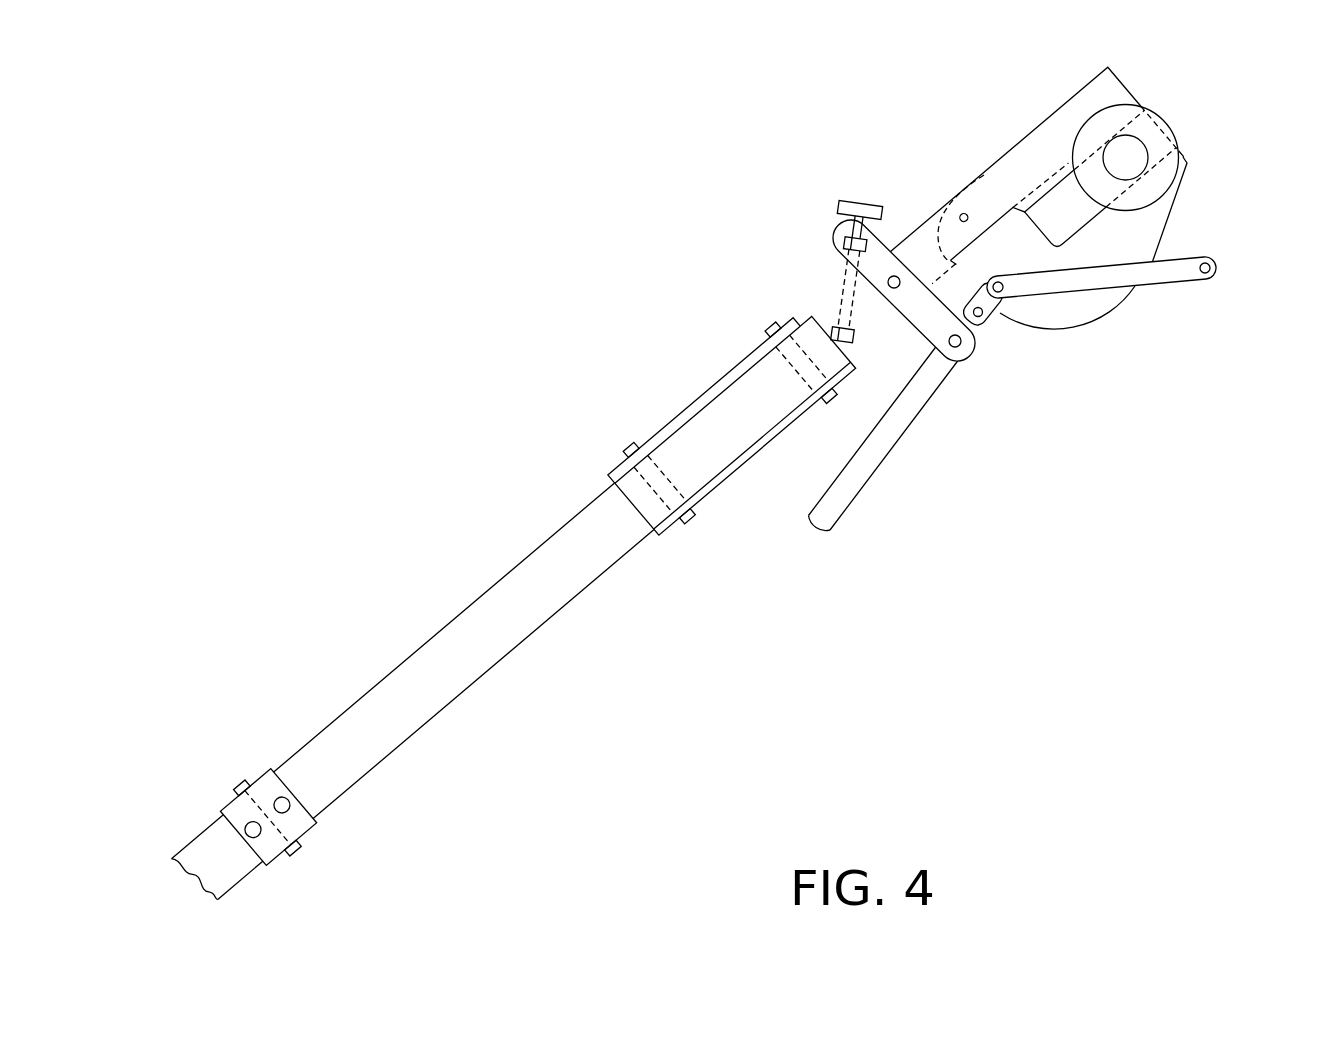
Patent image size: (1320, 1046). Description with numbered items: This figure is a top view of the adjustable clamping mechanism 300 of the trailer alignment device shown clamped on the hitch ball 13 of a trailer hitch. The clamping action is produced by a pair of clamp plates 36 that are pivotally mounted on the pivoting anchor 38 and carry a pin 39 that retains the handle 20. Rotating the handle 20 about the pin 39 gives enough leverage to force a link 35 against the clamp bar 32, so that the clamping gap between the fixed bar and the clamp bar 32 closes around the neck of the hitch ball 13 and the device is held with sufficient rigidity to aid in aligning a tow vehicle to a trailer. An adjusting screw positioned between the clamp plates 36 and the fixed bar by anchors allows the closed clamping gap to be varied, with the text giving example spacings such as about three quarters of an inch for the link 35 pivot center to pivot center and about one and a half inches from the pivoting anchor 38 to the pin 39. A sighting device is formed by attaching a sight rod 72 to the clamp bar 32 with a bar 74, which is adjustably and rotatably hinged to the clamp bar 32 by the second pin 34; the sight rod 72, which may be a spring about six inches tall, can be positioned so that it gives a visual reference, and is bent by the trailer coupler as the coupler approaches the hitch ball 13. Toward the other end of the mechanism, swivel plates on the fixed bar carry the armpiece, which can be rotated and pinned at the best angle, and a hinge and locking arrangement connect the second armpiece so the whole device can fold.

The adjustable clamping mechanism 300 is at (628, 153).
The clamp plates 36 is at (913, 340).
The pivoting anchor 38 is at (896, 276).
The pin 39 is at (954, 347).
The handle 20 is at (866, 472).
The clamp bar 32 is at (1152, 222).
The hitch ball 13 is at (1158, 134).
The second pin 34 is at (997, 282).
The link 35 is at (985, 318).
The sight rod 72 is at (1206, 274).
The bar 74 is at (1150, 286).